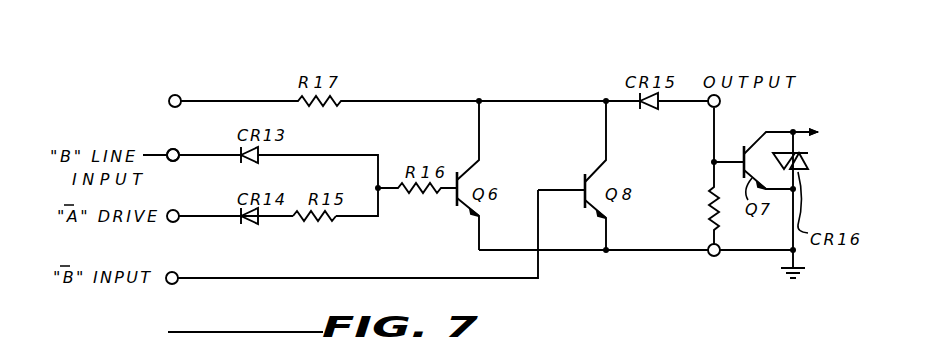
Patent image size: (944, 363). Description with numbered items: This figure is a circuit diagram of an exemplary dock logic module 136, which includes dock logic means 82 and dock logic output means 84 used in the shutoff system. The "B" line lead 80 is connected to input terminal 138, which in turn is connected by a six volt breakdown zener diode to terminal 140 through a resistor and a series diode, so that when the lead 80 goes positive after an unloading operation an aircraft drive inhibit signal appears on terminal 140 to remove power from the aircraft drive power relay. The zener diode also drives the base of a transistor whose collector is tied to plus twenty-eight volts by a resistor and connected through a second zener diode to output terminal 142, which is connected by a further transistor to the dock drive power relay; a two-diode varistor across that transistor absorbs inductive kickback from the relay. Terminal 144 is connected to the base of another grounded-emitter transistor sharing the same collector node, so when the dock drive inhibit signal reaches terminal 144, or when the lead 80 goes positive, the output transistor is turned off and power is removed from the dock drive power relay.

The lead 80 is at (160, 156).
The dock logic means 82 is at (172, 60).
The dock logic output means 84 is at (820, 102).
The dock logic module 136 is at (688, 315).
The input terminal 138 is at (177, 160).
The terminal 140 is at (177, 221).
The output terminal 142 is at (720, 106).
The terminal 144 is at (176, 283).